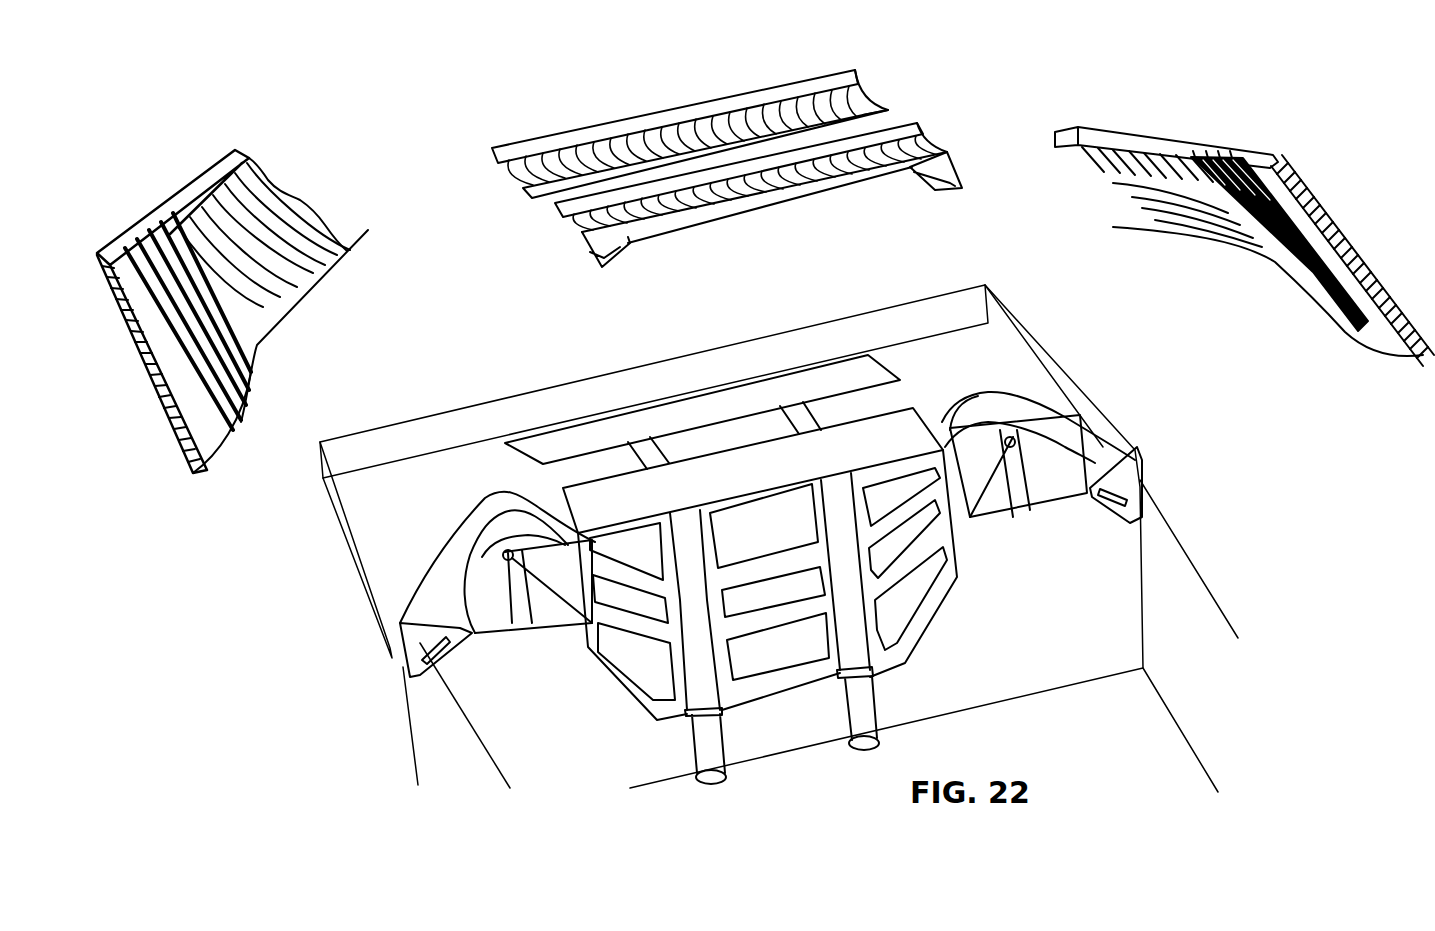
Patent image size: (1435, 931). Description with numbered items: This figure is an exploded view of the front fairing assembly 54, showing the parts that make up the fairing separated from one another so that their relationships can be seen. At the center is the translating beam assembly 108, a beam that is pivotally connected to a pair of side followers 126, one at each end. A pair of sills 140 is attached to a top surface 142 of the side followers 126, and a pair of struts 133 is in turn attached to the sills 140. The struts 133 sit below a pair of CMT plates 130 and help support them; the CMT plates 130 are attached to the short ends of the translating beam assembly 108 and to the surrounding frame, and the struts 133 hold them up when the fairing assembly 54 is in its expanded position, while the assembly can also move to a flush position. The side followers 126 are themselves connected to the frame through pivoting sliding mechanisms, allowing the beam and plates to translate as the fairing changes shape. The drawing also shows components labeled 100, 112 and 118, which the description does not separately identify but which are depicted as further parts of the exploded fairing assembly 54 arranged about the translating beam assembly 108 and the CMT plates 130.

The fairing assembly 54 is at (782, 56).
The slot in roof panel 100 is at (680, 400).
The translating beam assembly 108 is at (915, 595).
The upper channel rail 112 is at (867, 83).
The lower channel rail 118 is at (920, 140).
The side followers 126 is at (478, 637).
The CMT plates 130 is at (290, 293).
The struts 133 is at (240, 417).
The sills 140 is at (458, 528).
The top surface 142 is at (528, 510).